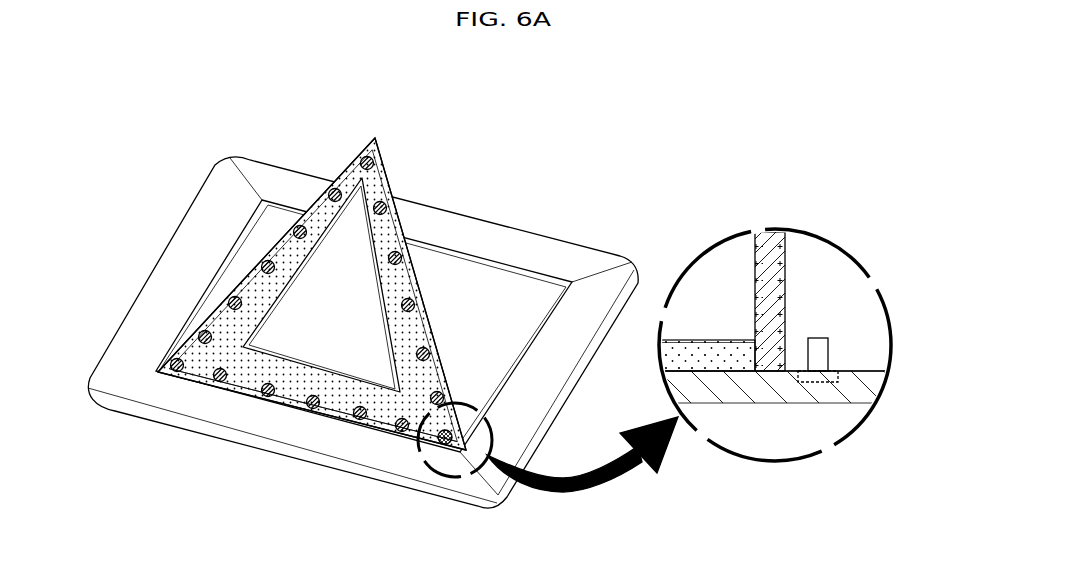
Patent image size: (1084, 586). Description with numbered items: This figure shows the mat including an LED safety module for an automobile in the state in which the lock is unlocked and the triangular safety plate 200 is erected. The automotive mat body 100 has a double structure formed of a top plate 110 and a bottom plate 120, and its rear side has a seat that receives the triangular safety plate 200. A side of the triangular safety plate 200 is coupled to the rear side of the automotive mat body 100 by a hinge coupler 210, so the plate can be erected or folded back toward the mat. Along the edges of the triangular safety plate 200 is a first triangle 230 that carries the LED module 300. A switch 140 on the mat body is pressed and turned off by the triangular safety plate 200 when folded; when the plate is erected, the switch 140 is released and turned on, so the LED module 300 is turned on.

The automotive mat body 100 is at (550, 245).
The top plate 110 is at (797, 395).
The bottom plate 120 is at (727, 365).
The switch 140 is at (441, 442).
The triangular safety plate 200 is at (255, 250).
The hinge coupler 210 is at (327, 413).
The first triangle 230 is at (313, 200).
The LED module 300 is at (366, 163).